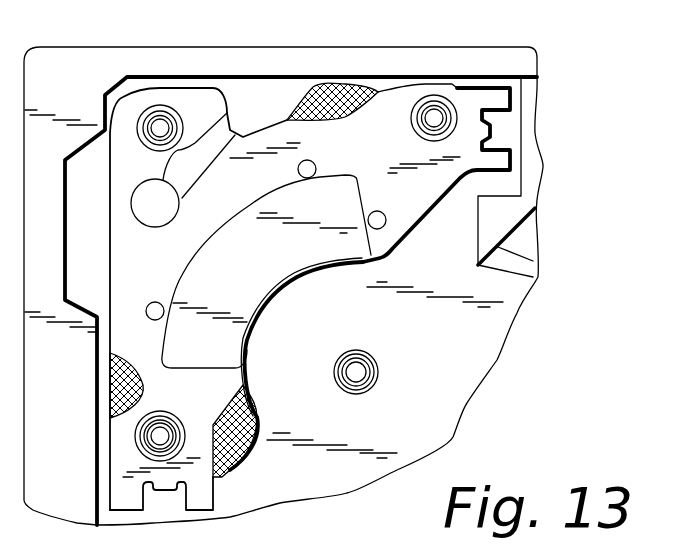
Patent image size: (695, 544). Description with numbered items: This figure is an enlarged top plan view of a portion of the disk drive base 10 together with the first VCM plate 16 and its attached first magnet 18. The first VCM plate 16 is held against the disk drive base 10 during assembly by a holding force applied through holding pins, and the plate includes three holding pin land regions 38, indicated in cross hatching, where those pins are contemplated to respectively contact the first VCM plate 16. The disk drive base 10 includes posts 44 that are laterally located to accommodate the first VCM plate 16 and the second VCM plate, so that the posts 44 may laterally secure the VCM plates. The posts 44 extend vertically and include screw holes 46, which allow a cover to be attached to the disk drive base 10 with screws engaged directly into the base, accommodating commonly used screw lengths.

The disk drive base 10 is at (47, 431).
The first VCM plate 16 is at (355, 159).
The first magnet 18 is at (237, 277).
The holding pin land regions 38 is at (338, 96).
The posts 44 is at (164, 112).
The screw holes 46 is at (148, 113).